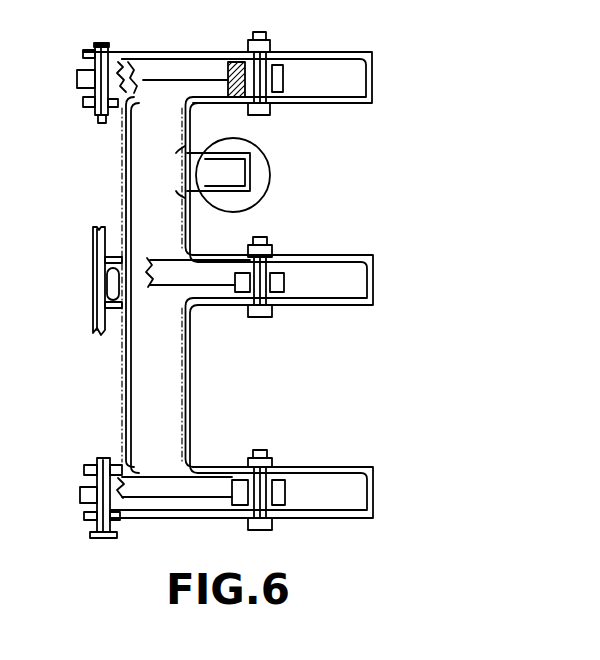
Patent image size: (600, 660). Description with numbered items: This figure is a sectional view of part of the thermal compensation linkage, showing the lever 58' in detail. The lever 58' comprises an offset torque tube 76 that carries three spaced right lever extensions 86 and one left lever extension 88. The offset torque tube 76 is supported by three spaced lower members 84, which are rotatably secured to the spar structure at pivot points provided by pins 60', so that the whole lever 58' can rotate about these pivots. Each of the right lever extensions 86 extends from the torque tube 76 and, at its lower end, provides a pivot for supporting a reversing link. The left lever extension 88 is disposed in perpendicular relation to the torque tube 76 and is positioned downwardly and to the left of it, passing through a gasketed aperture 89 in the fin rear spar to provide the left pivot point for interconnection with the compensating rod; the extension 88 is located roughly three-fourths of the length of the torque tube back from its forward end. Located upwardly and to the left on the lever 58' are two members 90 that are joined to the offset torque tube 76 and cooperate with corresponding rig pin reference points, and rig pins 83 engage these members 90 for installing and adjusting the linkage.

The offset torque tube 76 is at (132, 167).
The lever 58' is at (72, 261).
The rig pins 83 is at (106, 46).
The members 90 is at (77, 79).
The right lever extensions 86 is at (200, 67).
The lower members 84 is at (226, 85).
The pins 60' is at (288, 266).
The left lever extension 88 is at (236, 170).
The gasketed aperture 89 is at (242, 194).